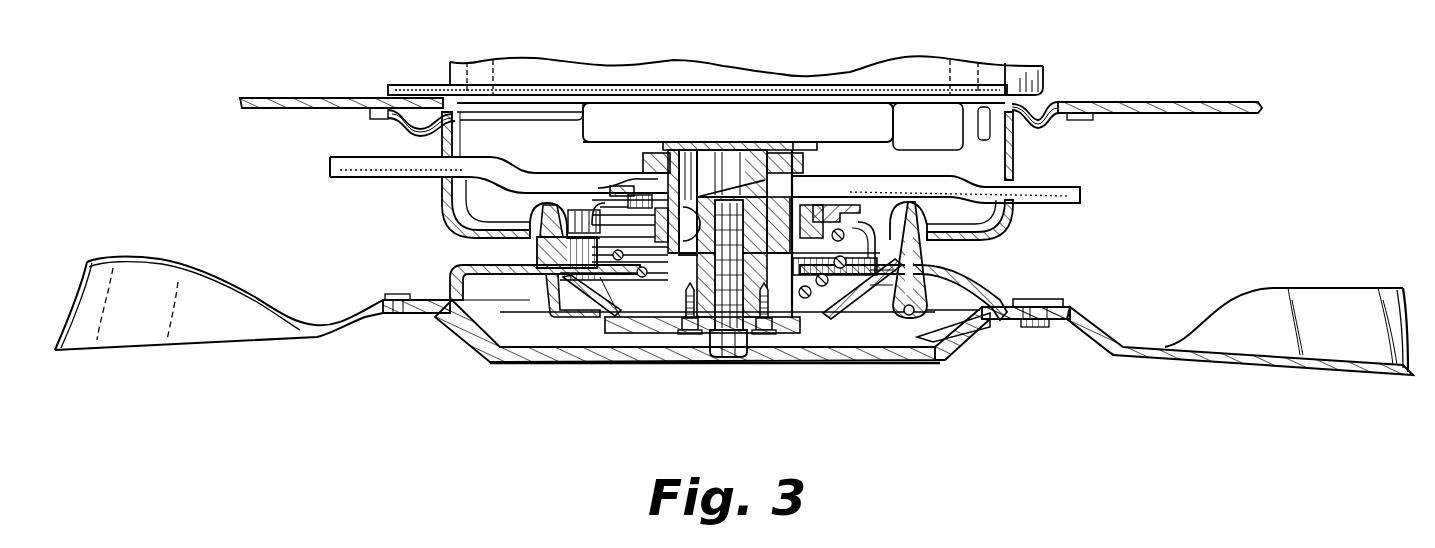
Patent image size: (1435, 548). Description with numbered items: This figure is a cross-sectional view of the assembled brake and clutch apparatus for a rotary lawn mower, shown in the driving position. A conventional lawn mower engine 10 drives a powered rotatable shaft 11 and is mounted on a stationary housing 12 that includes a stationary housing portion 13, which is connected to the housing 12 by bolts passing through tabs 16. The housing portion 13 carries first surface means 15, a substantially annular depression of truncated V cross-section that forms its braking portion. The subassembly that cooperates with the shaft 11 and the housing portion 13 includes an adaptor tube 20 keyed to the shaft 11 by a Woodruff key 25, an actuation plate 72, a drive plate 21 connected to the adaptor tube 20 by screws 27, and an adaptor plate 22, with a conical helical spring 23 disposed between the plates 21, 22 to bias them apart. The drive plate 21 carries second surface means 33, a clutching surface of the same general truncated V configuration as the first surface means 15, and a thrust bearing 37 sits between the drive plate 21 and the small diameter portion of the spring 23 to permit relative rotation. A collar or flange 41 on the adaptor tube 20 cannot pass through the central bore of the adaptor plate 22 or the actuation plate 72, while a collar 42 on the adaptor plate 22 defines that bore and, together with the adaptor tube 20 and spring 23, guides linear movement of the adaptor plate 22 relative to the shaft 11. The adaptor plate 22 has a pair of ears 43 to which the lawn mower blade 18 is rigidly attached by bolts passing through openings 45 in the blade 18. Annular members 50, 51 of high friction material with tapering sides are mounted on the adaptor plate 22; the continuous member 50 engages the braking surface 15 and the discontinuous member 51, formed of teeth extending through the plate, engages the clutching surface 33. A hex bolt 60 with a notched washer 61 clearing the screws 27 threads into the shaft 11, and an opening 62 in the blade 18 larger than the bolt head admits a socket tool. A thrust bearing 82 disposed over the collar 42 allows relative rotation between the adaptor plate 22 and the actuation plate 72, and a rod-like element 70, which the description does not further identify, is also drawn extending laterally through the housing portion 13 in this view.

The lawn mower engine 10 is at (1050, 73).
The powered rotatable shaft 11 is at (702, 142).
The stationary housing 12 is at (1192, 112).
The stationary housing portion 13 is at (1005, 235).
The first surface means 15 is at (542, 215).
The tabs 16 is at (372, 118).
The lawn mower blade 18 is at (318, 335).
The adaptor tube 20 is at (780, 300).
The drive plate 21 is at (860, 304).
The adaptor plate 22 is at (456, 276).
The conical helical spring 23 is at (647, 268).
The Woodruff key 25 is at (640, 165).
The screws 27 is at (778, 340).
The second surface means 33 is at (922, 333).
The thrust bearing 37 is at (627, 340).
The collar or flange 41 is at (832, 132).
The collar 42 is at (883, 212).
The ears 43 is at (383, 300).
The openings 45 is at (1032, 328).
The annular member 50 is at (540, 241).
The annular member 51 is at (915, 296).
The hex bolt 60 is at (726, 362).
The notched washer 61 is at (696, 342).
The opening 62 is at (683, 363).
The control rod 70 is at (365, 178).
The actuation plate 72 is at (872, 215).
The thrust bearing 82 is at (625, 190).